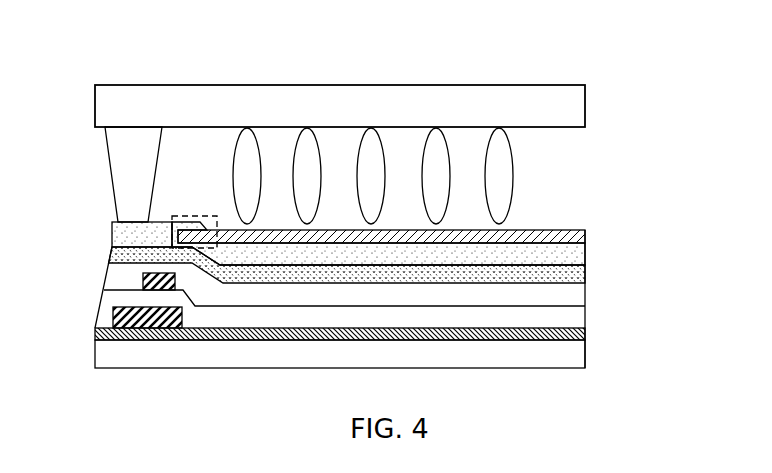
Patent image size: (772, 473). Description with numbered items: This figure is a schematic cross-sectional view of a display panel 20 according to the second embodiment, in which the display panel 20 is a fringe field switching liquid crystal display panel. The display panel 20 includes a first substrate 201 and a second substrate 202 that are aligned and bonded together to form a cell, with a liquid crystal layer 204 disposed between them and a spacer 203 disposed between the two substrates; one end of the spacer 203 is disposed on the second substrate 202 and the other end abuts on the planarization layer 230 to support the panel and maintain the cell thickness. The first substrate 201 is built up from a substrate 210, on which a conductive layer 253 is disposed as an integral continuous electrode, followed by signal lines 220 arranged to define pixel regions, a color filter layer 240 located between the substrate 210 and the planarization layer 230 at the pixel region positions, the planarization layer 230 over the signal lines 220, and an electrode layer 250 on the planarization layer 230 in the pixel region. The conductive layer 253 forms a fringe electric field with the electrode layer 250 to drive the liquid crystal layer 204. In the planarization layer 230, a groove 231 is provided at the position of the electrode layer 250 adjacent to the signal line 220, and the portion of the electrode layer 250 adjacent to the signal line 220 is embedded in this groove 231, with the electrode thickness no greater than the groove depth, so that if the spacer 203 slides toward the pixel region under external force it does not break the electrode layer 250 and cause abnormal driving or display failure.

The display panel 20 is at (112, 54).
The first substrate 201 is at (690, 233).
The second substrate 202 is at (550, 108).
The spacer 203 is at (133, 173).
The liquid crystal layer 204 is at (503, 180).
The substrate 210 is at (585, 362).
The signal lines 220 is at (587, 288).
The planarization layer 230 is at (585, 255).
The groove 231 is at (172, 228).
The color filter layer 240 is at (585, 277).
The electrode layer 250 is at (585, 233).
The conductive layer 253 is at (585, 335).